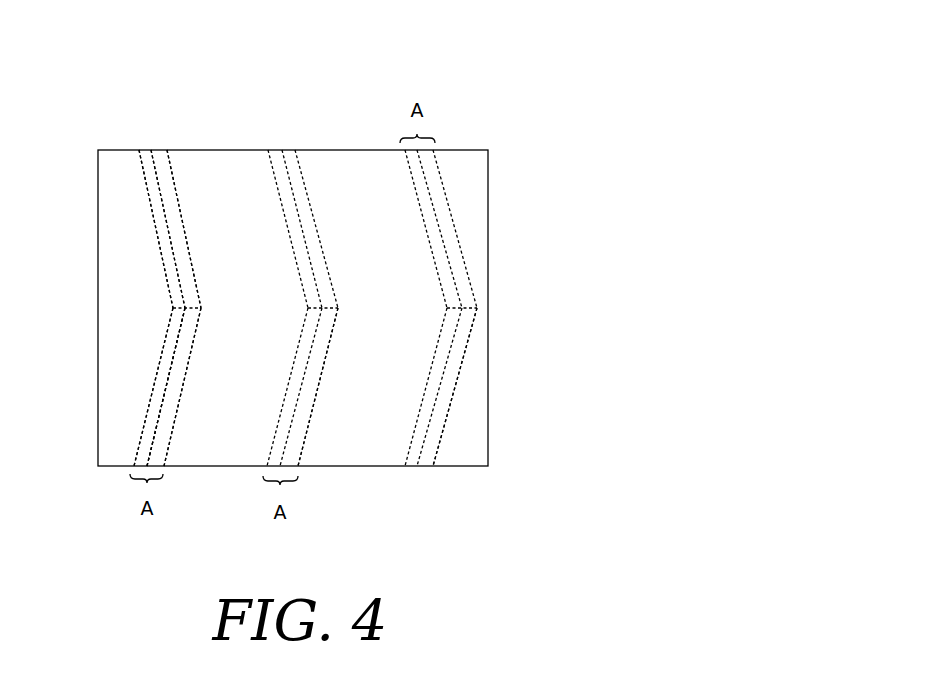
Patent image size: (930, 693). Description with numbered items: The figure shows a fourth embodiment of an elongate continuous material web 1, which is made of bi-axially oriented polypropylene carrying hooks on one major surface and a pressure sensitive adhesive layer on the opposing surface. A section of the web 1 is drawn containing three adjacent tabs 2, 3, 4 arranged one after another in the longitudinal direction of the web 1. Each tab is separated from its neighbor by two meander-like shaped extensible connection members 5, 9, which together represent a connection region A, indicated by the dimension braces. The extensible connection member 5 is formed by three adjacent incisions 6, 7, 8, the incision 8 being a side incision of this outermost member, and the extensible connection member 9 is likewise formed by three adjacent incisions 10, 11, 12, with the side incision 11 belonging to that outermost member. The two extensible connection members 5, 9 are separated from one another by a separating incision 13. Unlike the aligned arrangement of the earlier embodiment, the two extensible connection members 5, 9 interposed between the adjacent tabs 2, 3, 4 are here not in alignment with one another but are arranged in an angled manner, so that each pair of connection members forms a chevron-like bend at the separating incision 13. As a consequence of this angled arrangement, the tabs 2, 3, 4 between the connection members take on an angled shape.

The elongate continuous material web 1 is at (502, 145).
The tab 2 is at (122, 318).
The tab 3 is at (246, 319).
The tab 4 is at (384, 321).
The extensible connection member 5 is at (140, 172).
The incision 6 is at (137, 174).
The incision 7 is at (173, 203).
The side incision 8 is at (157, 192).
The extensible connection member 9 is at (143, 440).
The incision 10 is at (137, 433).
The side incision 11 is at (150, 453).
The incision 12 is at (178, 435).
The separating incision 13 is at (183, 307).